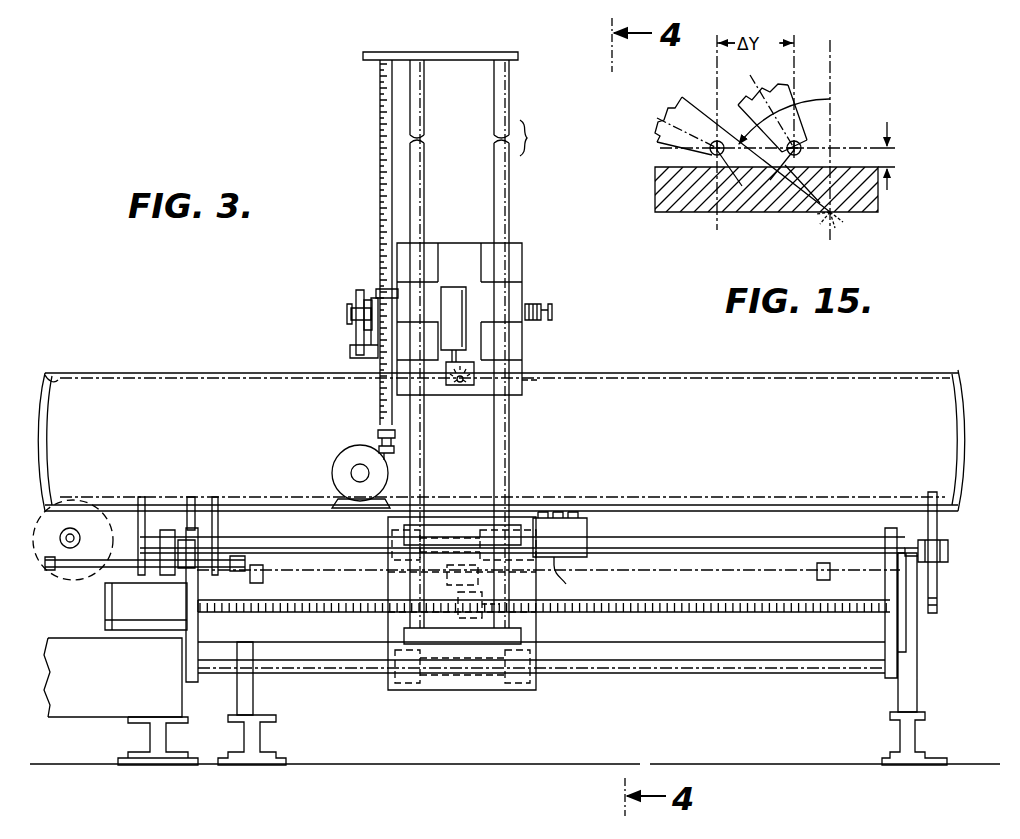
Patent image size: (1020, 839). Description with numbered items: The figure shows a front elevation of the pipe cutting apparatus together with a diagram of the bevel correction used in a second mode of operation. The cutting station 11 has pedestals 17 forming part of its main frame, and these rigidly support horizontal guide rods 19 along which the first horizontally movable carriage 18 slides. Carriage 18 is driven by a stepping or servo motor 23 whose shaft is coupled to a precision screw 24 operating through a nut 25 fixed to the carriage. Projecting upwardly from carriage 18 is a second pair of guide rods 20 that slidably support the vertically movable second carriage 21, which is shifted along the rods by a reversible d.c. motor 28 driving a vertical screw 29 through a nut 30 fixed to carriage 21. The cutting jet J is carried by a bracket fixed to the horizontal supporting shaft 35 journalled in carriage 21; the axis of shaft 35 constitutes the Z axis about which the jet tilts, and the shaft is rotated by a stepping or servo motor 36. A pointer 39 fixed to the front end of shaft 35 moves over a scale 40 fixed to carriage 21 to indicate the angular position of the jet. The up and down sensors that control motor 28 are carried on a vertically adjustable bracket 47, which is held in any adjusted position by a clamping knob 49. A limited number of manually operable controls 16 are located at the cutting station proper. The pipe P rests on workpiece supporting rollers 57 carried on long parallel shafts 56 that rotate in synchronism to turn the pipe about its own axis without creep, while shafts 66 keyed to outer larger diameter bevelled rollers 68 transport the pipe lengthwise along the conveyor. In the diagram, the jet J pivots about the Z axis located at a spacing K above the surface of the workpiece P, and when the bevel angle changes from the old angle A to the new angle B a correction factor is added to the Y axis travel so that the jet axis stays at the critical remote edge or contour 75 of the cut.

In FIG. 3, the pipe P is at (655, 372).
In FIG. 15, the pipe P is at (690, 212).
In FIG. 15, the cutting station 11 is at (592, 192).
In FIG. 3, the manually operable controls 16 is at (590, 527).
In FIG. 3, the pedestals 17 is at (195, 684).
In FIG. 3, the first horizontally movable carriage 18 is at (468, 692).
In FIG. 3, the horizontal guide rods 19 is at (655, 548).
In FIG. 3, the second pair of guide rods 20 is at (492, 115).
In FIG. 3, the vertically movable second carriage 21 is at (525, 247).
In FIG. 3, the stepping or servo motor 23 is at (135, 632).
In FIG. 3, the precision screw 24 is at (300, 612).
In FIG. 3, the nut 25 is at (538, 626).
In FIG. 3, the reversible d.c. motor 28 is at (353, 456).
In FIG. 3, the vertical screw 29 is at (378, 398).
In FIG. 3, the nut 30 is at (378, 292).
In FIG. 3, the horizontal supporting shaft 35 is at (457, 383).
In FIG. 3, the stepping or servo motor 36 is at (452, 287).
In FIG. 3, the pointer 39 is at (466, 384).
In FIG. 3, the scale 40 is at (480, 362).
In FIG. 3, the vertically adjustable bracket 47 is at (356, 332).
In FIG. 3, the clamping knob 49 is at (351, 312).
In FIG. 3, the long parallel shafts 56 is at (55, 567).
In FIG. 3, the workpiece supporting rollers 57 is at (215, 497).
In FIG. 3, the shafts 66 is at (78, 531).
In FIG. 3, the outer larger diameter bevelled rollers 68 is at (66, 508).
In FIG. 15, the inner edge or contour 75 is at (828, 212).
In FIG. 15, the cutting jet J is at (733, 92).
In FIG. 15, the bevel angle B is at (828, 57).
In FIG. 15, the bevel angle A is at (828, 100).
In FIG. 15, the spacing K is at (882, 143).
In FIG. 15, the Z axis Z is at (790, 156).